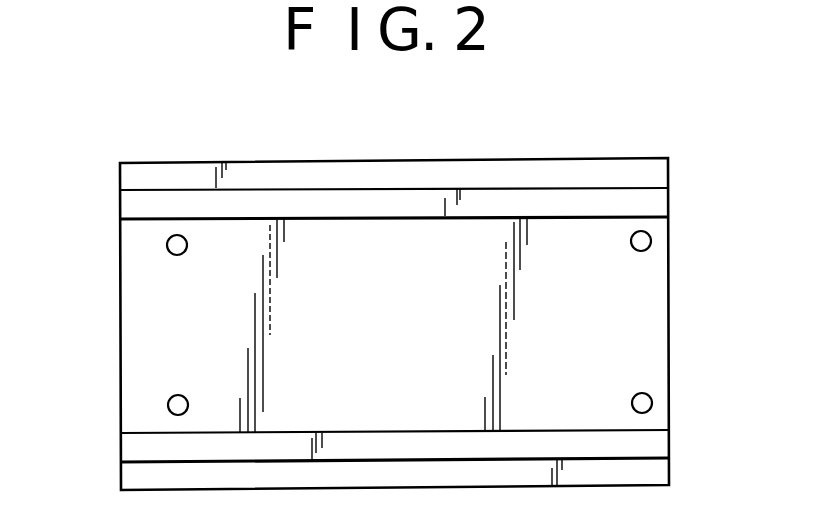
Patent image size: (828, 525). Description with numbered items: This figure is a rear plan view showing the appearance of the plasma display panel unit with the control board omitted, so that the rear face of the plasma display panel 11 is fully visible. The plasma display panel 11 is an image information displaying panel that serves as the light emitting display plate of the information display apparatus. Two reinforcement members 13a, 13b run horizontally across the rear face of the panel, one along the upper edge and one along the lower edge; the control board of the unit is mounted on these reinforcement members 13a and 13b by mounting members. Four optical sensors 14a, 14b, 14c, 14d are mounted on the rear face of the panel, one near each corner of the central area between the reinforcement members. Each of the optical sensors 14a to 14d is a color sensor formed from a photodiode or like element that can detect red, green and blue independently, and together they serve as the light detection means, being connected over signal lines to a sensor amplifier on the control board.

The plasma display panel 11 is at (401, 168).
The reinforcement member 13a is at (122, 204).
The reinforcement member 13b is at (132, 450).
The optical sensor 14a is at (167, 246).
The optical sensor 14b is at (651, 241).
The optical sensor 14c is at (168, 405).
The optical sensor 14d is at (652, 403).